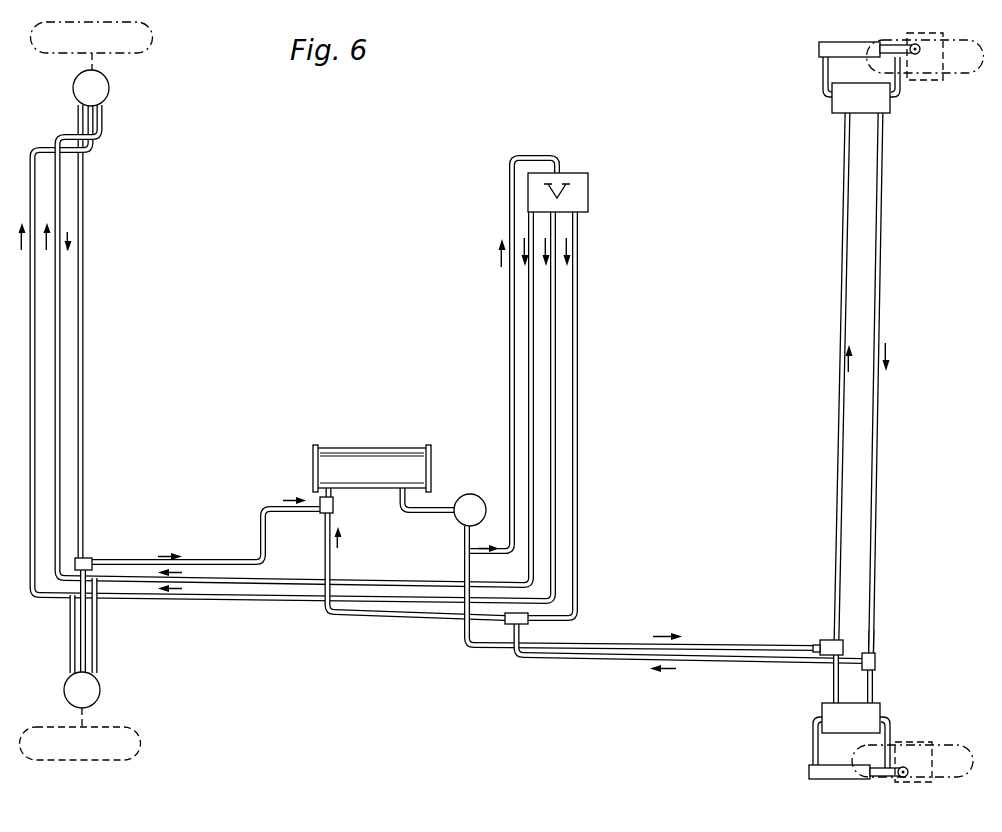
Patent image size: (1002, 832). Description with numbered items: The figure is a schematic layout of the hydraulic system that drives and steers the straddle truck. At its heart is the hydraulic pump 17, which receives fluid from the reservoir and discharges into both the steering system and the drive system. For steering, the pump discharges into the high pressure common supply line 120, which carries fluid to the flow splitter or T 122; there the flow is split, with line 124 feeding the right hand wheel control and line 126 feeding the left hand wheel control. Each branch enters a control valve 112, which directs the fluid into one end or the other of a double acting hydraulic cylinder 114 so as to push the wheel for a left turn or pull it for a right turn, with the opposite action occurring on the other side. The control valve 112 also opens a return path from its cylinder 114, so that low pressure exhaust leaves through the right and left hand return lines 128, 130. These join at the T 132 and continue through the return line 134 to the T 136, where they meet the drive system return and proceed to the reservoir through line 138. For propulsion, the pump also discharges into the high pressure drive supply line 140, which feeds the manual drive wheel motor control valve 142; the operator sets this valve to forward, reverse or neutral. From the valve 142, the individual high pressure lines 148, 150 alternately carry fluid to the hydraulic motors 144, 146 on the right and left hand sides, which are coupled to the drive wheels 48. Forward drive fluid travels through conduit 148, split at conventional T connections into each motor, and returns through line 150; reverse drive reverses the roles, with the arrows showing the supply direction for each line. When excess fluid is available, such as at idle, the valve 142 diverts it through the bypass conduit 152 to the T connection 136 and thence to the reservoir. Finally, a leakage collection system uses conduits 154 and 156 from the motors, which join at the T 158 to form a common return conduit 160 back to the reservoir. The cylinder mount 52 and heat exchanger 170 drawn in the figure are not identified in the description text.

The hydraulic pump 17 is at (472, 494).
The drive wheels 48 is at (148, 42).
The cylinder mount 52 is at (963, 74).
The control valve 112 is at (889, 113).
The hydraulic cylinder 114 is at (819, 48).
The high pressure common supply line 120 is at (456, 646).
The flow splitter or T 122 is at (825, 640).
The line 124 is at (833, 672).
The line 126 is at (842, 316).
The right hand return line 128 is at (878, 666).
The left hand return line 130 is at (880, 302).
The T 132 is at (873, 648).
The return line 134 is at (580, 664).
The T 136 is at (530, 622).
The line 138 is at (332, 566).
The high pressure drive supply line 140 is at (508, 322).
The manual drive wheel motor control valve 142 is at (572, 173).
The hydraulic motor 144 is at (100, 683).
The hydraulic motor 146 is at (108, 97).
The high pressure line 148 is at (268, 581).
The high pressure line 150 is at (262, 600).
The bypass conduit 152 is at (578, 374).
The conduit 154 is at (86, 644).
The conduit 156 is at (80, 520).
The T 158 is at (88, 557).
The common return conduit 160 is at (205, 562).
The heat exchanger 170 is at (368, 448).